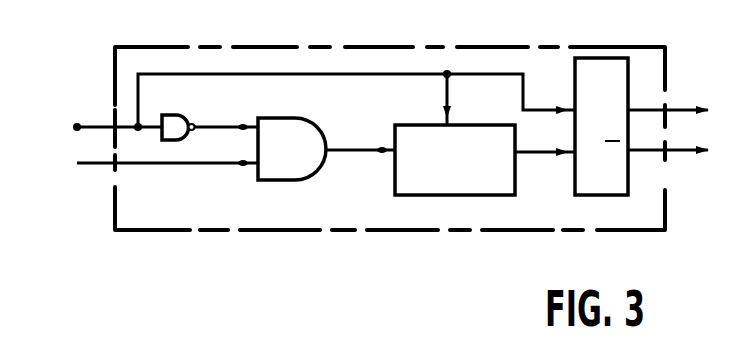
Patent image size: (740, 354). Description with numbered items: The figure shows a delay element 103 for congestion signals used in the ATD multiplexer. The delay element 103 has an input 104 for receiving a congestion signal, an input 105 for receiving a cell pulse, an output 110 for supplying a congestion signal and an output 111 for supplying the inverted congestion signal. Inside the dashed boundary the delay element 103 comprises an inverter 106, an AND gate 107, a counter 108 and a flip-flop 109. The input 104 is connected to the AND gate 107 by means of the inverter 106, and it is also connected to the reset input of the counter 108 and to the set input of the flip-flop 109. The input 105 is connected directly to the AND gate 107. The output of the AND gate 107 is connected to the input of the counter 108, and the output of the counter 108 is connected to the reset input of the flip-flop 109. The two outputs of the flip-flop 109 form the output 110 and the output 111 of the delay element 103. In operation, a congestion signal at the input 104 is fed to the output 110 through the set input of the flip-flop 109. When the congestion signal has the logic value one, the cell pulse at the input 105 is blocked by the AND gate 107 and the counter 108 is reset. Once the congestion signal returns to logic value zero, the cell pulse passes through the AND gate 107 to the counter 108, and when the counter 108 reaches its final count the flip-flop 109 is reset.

The delay element 103 is at (367, 42).
The input 104 is at (109, 119).
The input 105 is at (110, 166).
The inverter 106 is at (178, 115).
The AND gate 107 is at (287, 180).
The counter 108 is at (393, 176).
The flip-flop 109 is at (577, 195).
The output 110 is at (628, 105).
The output 111 is at (628, 153).